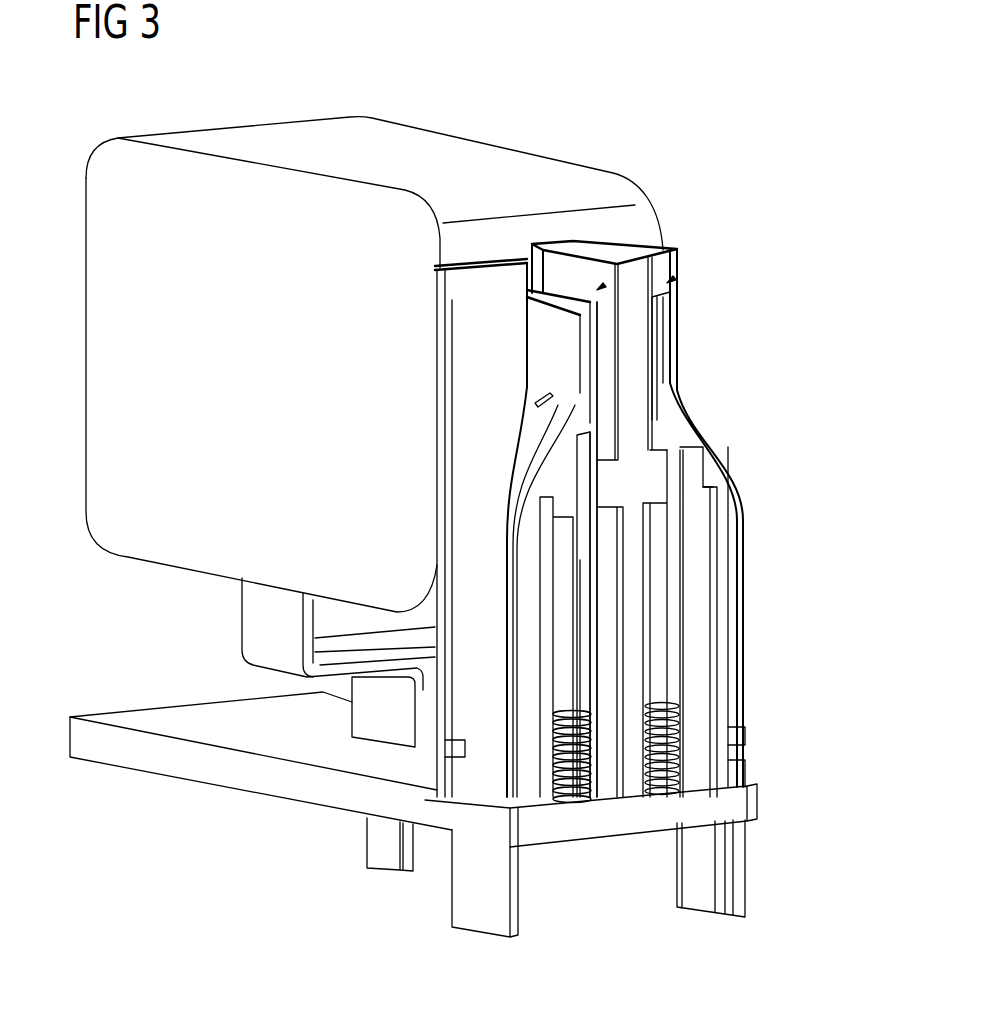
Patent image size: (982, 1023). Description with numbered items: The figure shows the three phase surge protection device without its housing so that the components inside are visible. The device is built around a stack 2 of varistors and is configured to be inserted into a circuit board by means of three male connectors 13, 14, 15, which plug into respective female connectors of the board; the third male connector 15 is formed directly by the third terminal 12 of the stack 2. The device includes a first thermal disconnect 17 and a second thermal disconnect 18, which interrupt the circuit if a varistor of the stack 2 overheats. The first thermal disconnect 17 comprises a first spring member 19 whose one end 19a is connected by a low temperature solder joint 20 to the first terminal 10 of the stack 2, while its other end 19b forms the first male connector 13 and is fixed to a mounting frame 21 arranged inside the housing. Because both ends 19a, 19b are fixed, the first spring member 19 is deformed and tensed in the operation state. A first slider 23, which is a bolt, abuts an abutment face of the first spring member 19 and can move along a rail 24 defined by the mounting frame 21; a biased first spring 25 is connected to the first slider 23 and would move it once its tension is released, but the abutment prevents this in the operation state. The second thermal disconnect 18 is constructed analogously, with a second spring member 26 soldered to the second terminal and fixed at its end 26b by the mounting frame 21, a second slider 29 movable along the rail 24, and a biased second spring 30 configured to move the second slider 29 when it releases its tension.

The stack 2 is at (368, 137).
The first terminal 10 is at (597, 335).
The third terminal 12 is at (340, 857).
The first male connector 13 is at (479, 908).
The second male connector 14 is at (704, 902).
The third male connector 15 is at (377, 847).
The first thermal disconnect 17 is at (602, 286).
The second thermal disconnect 18 is at (672, 280).
The first spring member 19 is at (467, 703).
The end of the first spring member 19a is at (533, 332).
The other end of the first spring member 19b is at (487, 917).
The low temperature solder joint 20 is at (570, 307).
The mounting frame 21 is at (173, 760).
The first slider 23 is at (583, 577).
The rail 24 is at (673, 486).
The first spring 25 is at (600, 760).
The second spring member 26 is at (713, 433).
The end of the second spring member 26b is at (708, 897).
The second slider 29 is at (653, 543).
The second spring 30 is at (680, 753).